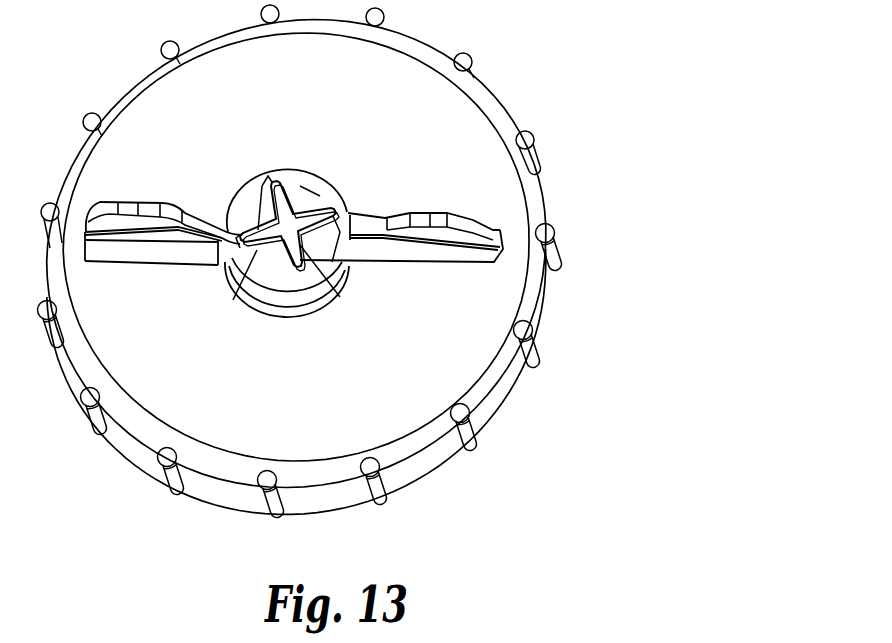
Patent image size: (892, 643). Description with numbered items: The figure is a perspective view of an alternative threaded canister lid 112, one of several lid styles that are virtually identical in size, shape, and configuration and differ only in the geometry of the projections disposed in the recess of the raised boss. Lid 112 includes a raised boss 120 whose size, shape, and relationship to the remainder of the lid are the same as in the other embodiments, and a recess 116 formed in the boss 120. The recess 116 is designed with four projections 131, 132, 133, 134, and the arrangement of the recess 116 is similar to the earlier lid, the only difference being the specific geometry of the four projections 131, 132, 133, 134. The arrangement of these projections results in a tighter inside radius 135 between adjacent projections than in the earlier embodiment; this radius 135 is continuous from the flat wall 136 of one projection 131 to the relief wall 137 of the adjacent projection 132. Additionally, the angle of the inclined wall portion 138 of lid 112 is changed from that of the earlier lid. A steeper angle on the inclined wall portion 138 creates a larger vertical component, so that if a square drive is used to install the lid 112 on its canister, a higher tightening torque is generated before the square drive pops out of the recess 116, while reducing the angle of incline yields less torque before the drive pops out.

The lid 112 is at (624, 110).
The recess 116 is at (300, 225).
The raised boss 120 is at (343, 196).
The projection 131 is at (268, 178).
The projection 132 is at (312, 258).
The projection 133 is at (270, 266).
The projection 134 is at (262, 231).
The inside radius 135 is at (363, 212).
The flat wall 136 is at (322, 192).
The relief wall 137 is at (332, 262).
The inclined wall portion 138 is at (287, 180).